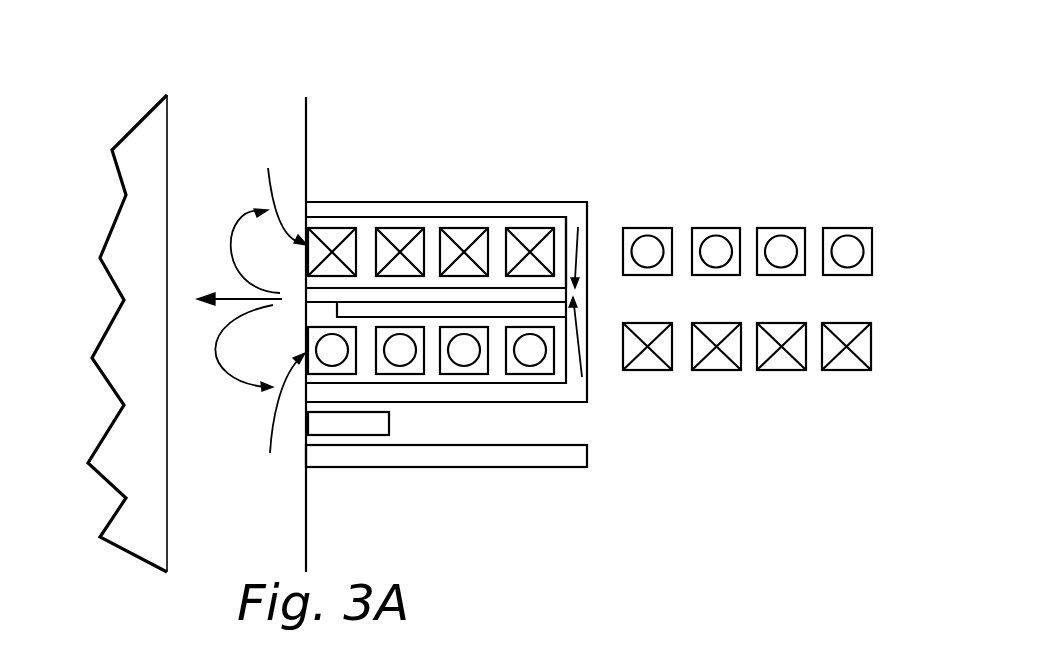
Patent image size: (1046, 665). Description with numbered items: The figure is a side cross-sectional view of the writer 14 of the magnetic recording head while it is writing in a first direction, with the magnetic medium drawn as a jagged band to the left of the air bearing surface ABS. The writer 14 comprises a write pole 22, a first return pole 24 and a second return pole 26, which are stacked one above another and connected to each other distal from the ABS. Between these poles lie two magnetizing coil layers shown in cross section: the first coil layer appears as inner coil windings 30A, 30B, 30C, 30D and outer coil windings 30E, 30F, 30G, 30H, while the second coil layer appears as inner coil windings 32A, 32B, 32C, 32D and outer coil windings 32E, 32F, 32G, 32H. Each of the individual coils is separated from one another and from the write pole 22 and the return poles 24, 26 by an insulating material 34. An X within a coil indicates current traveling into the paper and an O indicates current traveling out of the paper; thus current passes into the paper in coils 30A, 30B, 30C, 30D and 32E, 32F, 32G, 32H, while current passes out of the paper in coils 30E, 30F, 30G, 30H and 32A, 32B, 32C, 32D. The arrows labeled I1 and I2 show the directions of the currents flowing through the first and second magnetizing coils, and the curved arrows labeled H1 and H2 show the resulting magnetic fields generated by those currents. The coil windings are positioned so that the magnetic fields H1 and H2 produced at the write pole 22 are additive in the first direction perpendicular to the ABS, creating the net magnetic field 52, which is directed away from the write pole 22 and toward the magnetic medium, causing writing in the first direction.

The writer 14 is at (116, 90).
The write pole 22 is at (364, 288).
The first return pole 24 is at (458, 217).
The second return pole 26 is at (449, 403).
The inner coil winding 30A is at (340, 228).
The inner coil winding 30B is at (413, 228).
The inner coil winding 30C is at (473, 228).
The inner coil winding 30D is at (540, 228).
The outer coil winding 30E is at (650, 228).
The outer coil winding 30F is at (717, 228).
The outer coil winding 30G is at (783, 228).
The outer coil winding 30H is at (838, 228).
The inner coil winding 32A is at (329, 374).
The inner coil winding 32B is at (399, 374).
The inner coil winding 32C is at (466, 374).
The inner coil winding 32D is at (533, 374).
The outer coil winding 32E is at (643, 372).
The outer coil winding 32F is at (710, 372).
The outer coil winding 32G is at (777, 372).
The outer coil winding 32H is at (850, 372).
The insulating material 34 is at (310, 313).
The net magnetic field 52 is at (230, 300).
The magnetic field H1 is at (238, 226).
The magnetic field H2 is at (242, 375).
The current I1 is at (278, 187).
The current I2 is at (276, 422).
The air bearing surface ABS is at (302, 317).